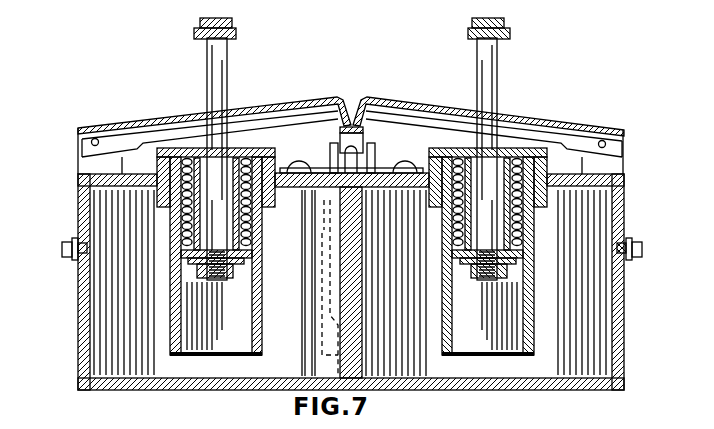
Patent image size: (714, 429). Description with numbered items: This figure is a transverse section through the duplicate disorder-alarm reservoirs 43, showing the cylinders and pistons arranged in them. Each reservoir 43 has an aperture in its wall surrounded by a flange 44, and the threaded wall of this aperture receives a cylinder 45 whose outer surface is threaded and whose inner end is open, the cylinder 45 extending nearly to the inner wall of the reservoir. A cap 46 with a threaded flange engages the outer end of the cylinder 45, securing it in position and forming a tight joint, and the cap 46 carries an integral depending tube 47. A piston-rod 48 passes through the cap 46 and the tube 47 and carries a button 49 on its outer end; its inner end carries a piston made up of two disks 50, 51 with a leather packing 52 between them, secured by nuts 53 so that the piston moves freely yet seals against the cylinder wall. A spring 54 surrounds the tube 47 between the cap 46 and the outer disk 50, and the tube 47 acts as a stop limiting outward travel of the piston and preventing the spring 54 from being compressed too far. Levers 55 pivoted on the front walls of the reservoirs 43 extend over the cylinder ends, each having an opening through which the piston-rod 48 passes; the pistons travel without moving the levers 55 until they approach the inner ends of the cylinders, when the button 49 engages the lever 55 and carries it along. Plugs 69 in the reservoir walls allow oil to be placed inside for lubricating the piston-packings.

The disorder-alarm reservoir 43 is at (80, 200).
The flange 44 is at (262, 205).
The cylinder 45 is at (262, 297).
The cap 46 is at (265, 145).
The depending tube 47 is at (240, 240).
The piston-rod 48 is at (213, 95).
The button 49 is at (237, 35).
The outer disk 50 is at (182, 255).
The inner disk 51 is at (175, 288).
The packing 52 is at (178, 268).
The nut 53 is at (222, 280).
The spring 54 is at (167, 222).
The lever 55 is at (323, 100).
The plug 69 is at (62, 249).